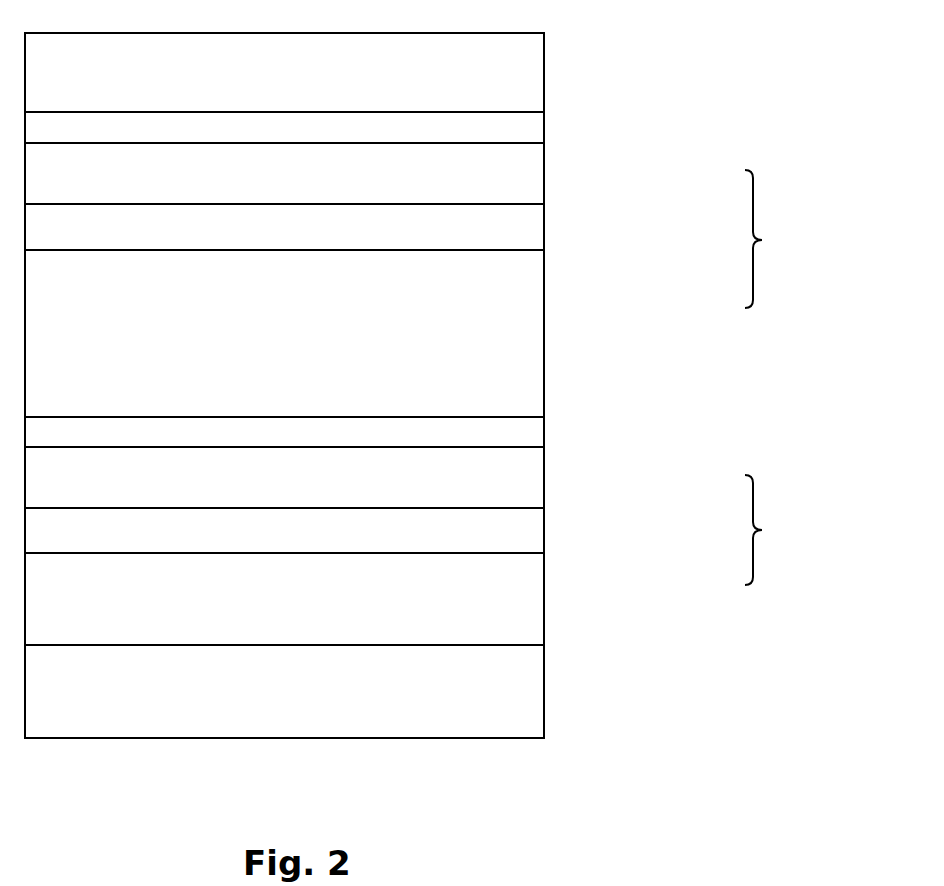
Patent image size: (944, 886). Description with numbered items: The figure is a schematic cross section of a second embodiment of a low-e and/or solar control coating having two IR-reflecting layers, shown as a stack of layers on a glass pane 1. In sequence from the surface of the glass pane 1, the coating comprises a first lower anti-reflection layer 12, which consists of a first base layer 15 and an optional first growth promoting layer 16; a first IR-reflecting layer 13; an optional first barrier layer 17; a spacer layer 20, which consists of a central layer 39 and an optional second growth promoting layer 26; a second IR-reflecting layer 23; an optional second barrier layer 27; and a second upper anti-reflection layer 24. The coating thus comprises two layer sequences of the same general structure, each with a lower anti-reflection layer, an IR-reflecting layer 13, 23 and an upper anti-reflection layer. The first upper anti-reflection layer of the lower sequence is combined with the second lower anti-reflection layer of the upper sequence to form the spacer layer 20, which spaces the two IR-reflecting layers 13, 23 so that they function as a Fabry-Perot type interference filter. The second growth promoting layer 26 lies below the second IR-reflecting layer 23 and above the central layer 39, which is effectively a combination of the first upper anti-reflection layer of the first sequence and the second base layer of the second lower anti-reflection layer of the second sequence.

The glass pane 1 is at (528, 691).
The first lower anti-reflection layer 12 is at (780, 530).
The first IR-reflecting layer 13 is at (528, 477).
The first base layer 15 is at (528, 598).
The first growth promoting layer 16 is at (528, 523).
The first barrier layer 17 is at (528, 432).
The spacer layer 20 is at (780, 239).
The second IR-reflecting layer 23 is at (528, 171).
The second upper anti-reflection layer 24 is at (528, 78).
The second growth promoting layer 26 is at (528, 232).
The second barrier layer 27 is at (528, 126).
The central layer 39 is at (528, 320).